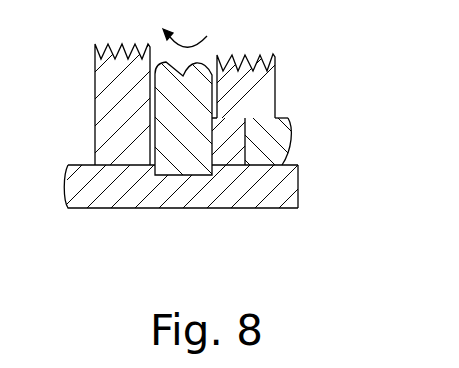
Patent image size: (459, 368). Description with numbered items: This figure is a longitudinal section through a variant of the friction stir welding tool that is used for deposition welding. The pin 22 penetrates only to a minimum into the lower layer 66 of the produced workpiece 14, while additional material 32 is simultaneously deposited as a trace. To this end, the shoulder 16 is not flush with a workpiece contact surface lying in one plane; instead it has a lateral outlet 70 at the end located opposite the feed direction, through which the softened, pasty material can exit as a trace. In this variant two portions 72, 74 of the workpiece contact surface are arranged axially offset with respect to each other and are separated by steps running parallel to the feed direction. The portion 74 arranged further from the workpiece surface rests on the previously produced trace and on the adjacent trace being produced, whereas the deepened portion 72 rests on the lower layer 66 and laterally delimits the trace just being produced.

The workpiece 14 is at (197, 192).
The shoulder 16 is at (275, 71).
The pin 22 is at (180, 178).
The additional material 32 is at (294, 137).
The lower layer 66 is at (300, 167).
The lateral outlet 70 is at (282, 110).
The deepened portion 72 is at (122, 168).
The portion arranged further away from the workpiece surface 74 is at (265, 171).